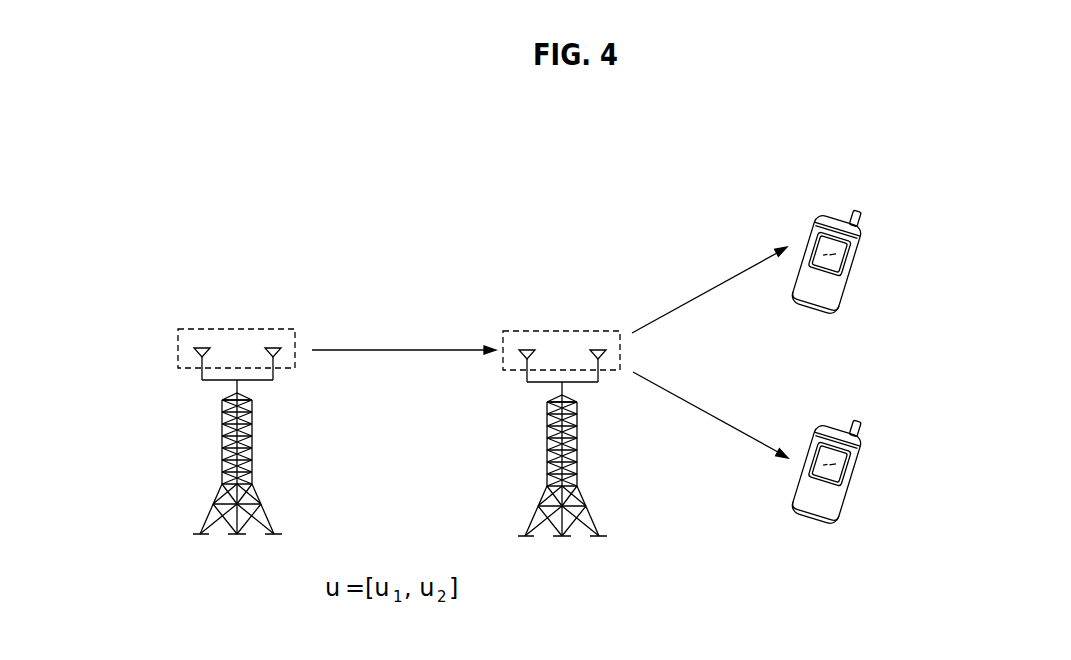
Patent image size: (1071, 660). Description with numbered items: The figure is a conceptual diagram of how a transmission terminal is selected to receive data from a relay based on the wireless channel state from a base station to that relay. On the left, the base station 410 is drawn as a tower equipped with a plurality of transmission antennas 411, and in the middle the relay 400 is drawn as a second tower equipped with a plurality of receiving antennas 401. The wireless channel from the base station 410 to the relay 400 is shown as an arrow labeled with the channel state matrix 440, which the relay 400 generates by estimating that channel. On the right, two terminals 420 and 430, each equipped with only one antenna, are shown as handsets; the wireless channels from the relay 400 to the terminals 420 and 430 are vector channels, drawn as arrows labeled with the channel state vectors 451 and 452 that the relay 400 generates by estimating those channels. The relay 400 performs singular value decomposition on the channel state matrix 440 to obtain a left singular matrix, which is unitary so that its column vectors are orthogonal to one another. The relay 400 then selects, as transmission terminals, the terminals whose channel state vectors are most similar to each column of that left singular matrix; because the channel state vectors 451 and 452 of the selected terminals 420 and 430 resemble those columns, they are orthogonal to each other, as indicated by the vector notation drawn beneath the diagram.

The relay 400 is at (547, 428).
The receiving antennas 401 is at (561, 332).
The base station 410 is at (222, 426).
The transmission antennas 411 is at (236, 329).
The terminal 420 is at (848, 203).
The terminal 430 is at (848, 413).
The channel state matrix 440 is at (397, 395).
The channel state vector 451 is at (697, 252).
The channel state vector 452 is at (697, 442).